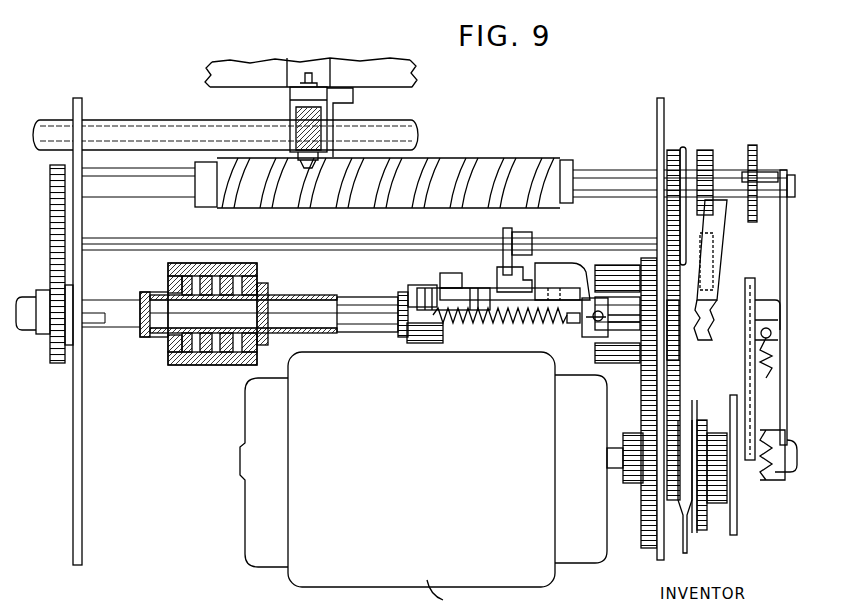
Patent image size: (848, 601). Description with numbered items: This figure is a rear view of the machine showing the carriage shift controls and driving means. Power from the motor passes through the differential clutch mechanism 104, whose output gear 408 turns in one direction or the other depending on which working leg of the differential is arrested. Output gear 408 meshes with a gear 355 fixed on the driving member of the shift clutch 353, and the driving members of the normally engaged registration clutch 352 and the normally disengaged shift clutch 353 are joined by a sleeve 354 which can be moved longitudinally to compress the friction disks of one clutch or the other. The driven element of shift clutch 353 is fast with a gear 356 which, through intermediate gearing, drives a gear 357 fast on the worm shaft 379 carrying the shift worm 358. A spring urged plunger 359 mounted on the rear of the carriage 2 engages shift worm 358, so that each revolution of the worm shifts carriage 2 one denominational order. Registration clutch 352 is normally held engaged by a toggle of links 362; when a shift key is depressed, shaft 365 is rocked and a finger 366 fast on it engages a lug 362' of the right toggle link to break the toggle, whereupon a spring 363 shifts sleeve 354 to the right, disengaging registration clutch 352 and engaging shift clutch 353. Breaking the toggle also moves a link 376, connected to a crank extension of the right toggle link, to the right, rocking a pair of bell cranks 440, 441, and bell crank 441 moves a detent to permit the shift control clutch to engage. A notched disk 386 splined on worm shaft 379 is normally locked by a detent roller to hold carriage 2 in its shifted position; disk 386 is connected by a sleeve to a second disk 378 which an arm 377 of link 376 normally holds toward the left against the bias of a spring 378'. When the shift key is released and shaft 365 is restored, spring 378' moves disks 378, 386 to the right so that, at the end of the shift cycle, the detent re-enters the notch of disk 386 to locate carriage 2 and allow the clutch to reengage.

The carriage 2 is at (258, 65).
The differential clutch mechanism 104 is at (726, 540).
The registration clutch 352 is at (178, 365).
The shift clutch 353 is at (585, 375).
The sleeve 354 is at (360, 333).
The gear 355 is at (640, 355).
The gear 356 is at (673, 340).
The gear 357 is at (673, 150).
The shift worm 358 is at (445, 157).
The spring urged plunger 359 is at (318, 160).
The toggle links 362 is at (489, 327).
The lug 362' is at (553, 259).
The spring 363 is at (507, 320).
The shaft 365 is at (355, 250).
The finger 366 is at (507, 260).
The link 376 is at (618, 293).
The arm 377 is at (718, 215).
The disk 378 is at (719, 163).
The spring 378' is at (707, 179).
The worm shaft 379 is at (598, 177).
The disk 386 is at (782, 134).
The output gear 408 is at (643, 545).
The bell crank 440 is at (765, 320).
The bell crank 441 is at (803, 453).